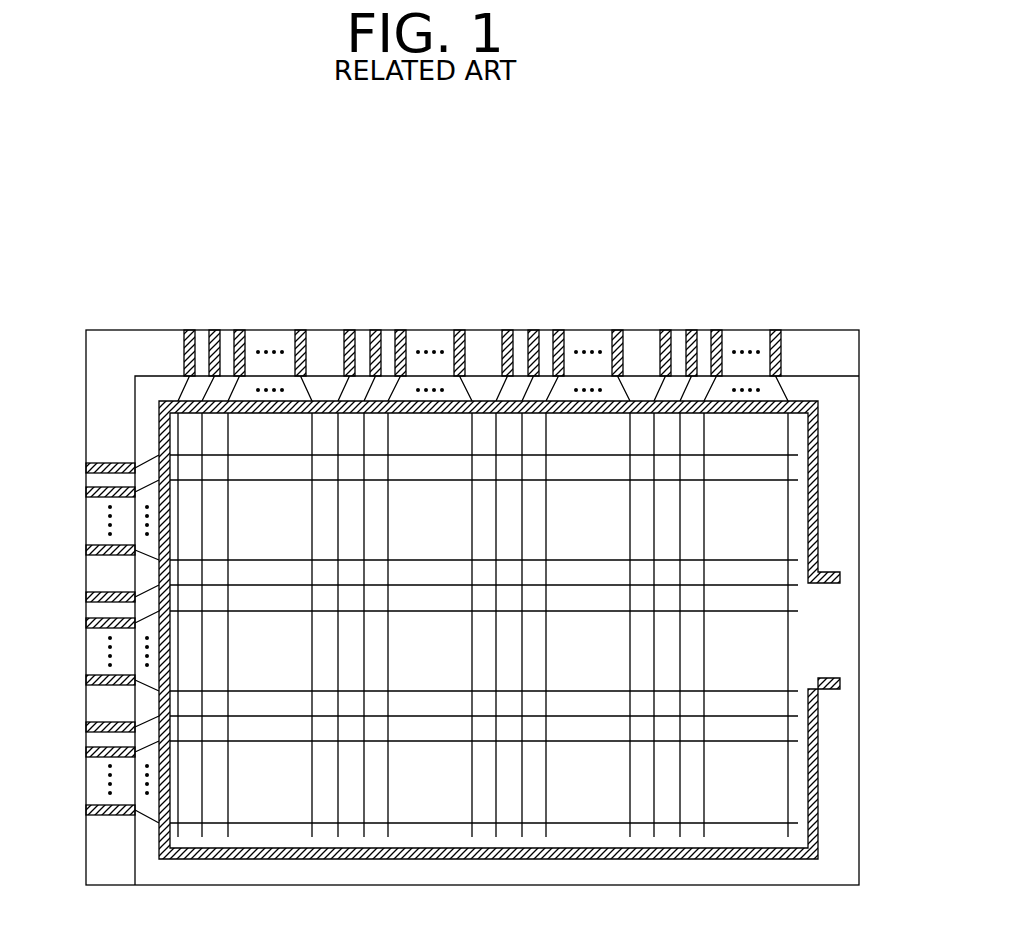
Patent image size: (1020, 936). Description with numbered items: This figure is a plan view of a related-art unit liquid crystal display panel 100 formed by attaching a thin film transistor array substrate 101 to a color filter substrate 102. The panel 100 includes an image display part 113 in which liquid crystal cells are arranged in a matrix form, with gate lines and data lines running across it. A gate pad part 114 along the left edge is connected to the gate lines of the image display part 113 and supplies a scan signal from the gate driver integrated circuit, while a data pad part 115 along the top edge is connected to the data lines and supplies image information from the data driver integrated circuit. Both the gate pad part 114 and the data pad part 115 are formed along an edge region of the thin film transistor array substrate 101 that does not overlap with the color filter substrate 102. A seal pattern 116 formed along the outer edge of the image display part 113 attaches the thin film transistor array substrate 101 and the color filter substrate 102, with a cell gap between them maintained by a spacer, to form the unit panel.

The liquid crystal display panel 100 is at (115, 311).
The thin film transistor array substrate 101 is at (847, 352).
The color filter substrate 102 is at (847, 421).
The image display part 113 is at (417, 533).
The gate pad part 114 is at (73, 458).
The data pad part 115 is at (790, 309).
The seal pattern 116 is at (815, 493).